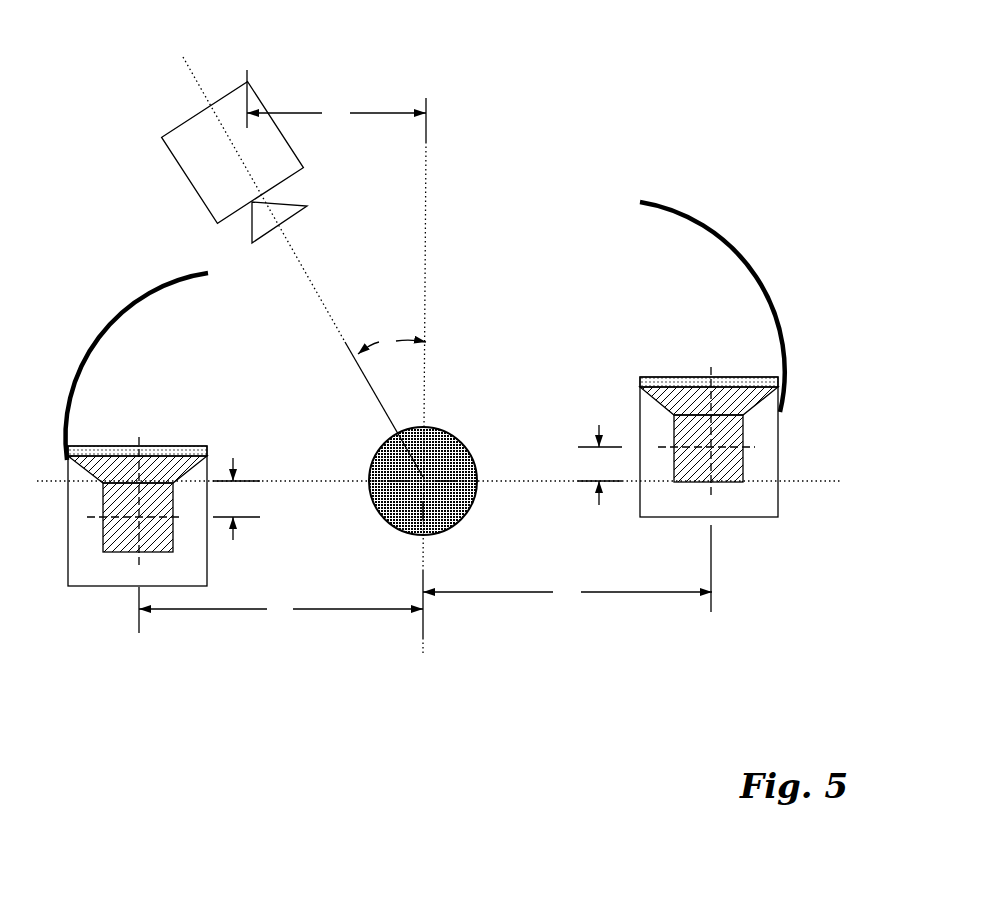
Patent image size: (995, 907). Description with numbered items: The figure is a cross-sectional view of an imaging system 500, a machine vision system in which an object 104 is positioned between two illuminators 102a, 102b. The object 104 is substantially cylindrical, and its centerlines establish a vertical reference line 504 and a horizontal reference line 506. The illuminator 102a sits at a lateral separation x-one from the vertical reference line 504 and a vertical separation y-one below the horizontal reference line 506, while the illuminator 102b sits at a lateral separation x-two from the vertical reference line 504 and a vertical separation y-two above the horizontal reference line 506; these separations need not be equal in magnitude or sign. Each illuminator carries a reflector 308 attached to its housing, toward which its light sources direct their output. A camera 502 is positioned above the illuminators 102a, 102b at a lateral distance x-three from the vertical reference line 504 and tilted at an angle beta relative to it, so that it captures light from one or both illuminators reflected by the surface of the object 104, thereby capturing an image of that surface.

The imaging system 500 is at (675, 66).
The camera 502 is at (180, 136).
The vertical reference line 504 is at (427, 215).
The horizontal reference line 506 is at (323, 482).
The object 104 is at (452, 453).
The illuminator 102a is at (98, 597).
The illuminator 102b is at (769, 229).
The reflector 308 is at (106, 331).